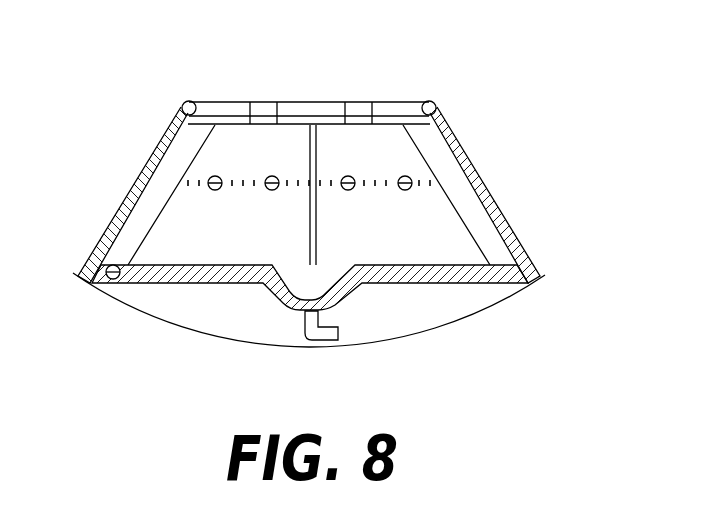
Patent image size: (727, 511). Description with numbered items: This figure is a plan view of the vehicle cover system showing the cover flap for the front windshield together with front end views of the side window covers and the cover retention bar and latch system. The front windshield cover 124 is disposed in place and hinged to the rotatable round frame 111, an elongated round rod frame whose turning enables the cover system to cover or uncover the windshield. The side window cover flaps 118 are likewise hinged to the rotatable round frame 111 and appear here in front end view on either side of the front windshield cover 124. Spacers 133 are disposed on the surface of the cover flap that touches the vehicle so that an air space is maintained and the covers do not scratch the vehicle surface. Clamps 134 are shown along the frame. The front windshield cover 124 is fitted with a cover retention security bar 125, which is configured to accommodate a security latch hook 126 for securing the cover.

The rotatable round frame 111 is at (183, 106).
The cover flaps for side windows 118 is at (458, 149).
The cover flap for front windshield 124 is at (178, 210).
The cover retention security bar 125 is at (460, 283).
The security latch hook 126 is at (303, 323).
The spacers 133 is at (412, 184).
The clamps 134 is at (358, 105).